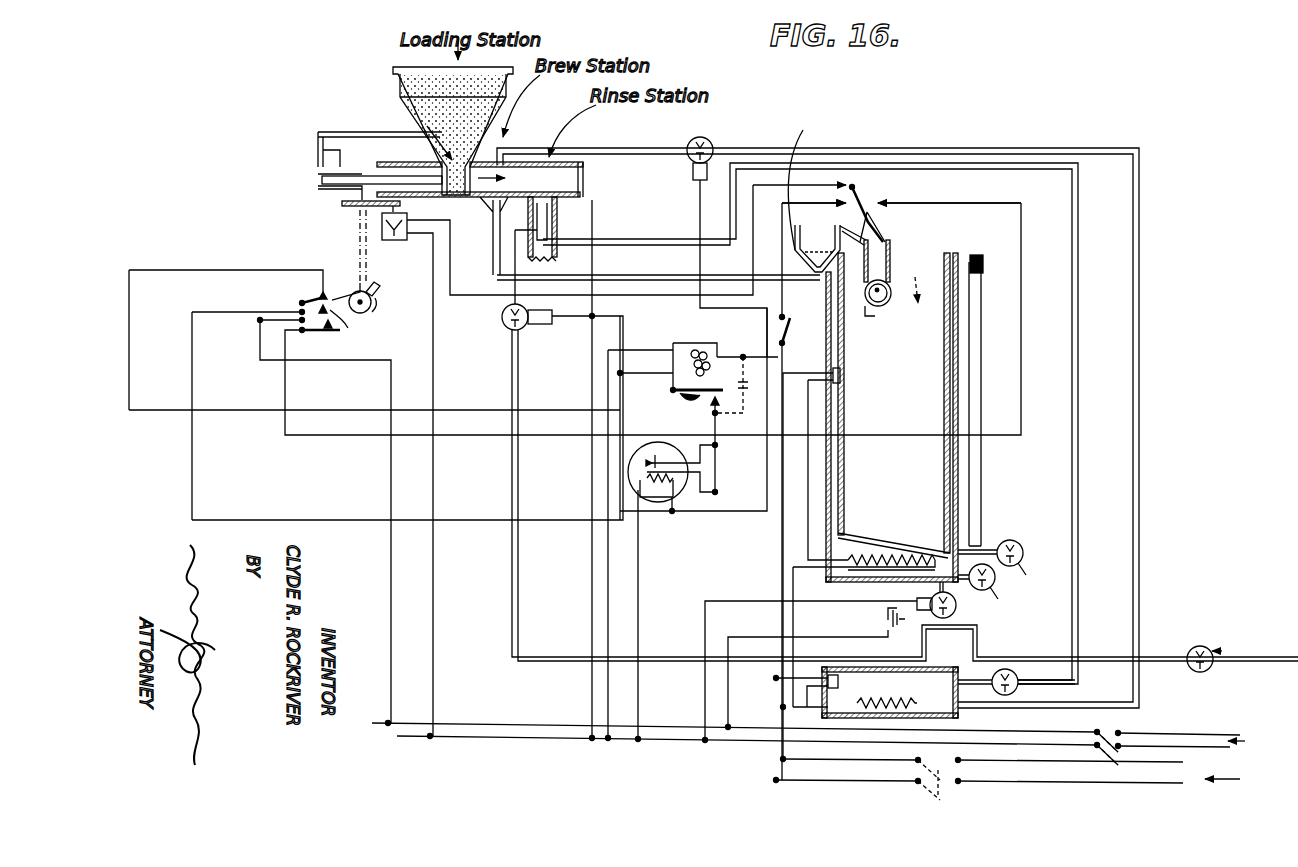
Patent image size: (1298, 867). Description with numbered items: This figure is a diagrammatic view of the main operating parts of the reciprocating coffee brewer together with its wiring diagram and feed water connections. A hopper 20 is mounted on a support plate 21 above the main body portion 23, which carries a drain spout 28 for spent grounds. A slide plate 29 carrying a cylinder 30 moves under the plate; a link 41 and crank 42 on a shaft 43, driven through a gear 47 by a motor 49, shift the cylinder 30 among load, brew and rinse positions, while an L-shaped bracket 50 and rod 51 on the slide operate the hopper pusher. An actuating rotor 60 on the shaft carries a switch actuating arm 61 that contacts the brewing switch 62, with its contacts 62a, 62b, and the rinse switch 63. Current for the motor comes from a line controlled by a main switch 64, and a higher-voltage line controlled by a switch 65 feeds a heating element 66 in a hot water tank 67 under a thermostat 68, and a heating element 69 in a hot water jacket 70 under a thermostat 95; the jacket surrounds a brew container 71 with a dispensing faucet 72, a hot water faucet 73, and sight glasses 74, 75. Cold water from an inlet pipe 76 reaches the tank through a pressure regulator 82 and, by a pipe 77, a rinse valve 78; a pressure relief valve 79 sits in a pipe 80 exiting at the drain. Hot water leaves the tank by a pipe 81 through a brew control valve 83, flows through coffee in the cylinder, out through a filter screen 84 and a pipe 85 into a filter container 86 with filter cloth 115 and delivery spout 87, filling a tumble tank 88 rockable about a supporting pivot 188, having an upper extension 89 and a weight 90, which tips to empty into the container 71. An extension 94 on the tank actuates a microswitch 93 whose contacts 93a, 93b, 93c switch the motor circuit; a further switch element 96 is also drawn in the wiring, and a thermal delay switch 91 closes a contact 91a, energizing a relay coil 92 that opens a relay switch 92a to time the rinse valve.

The hopper 20 is at (415, 105).
The support plate 21 is at (420, 160).
The main body portion 23 is at (583, 192).
The drain spout 28 is at (552, 220).
The slide plate 29 is at (320, 163).
The cylinder 30 is at (478, 200).
The link 41 is at (375, 180).
The crank 42 is at (325, 190).
The shaft 43 is at (402, 205).
The gear 47 is at (345, 207).
The motor 49 is at (395, 240).
The L-shaped bracket 50 is at (318, 150).
The rod 51 is at (333, 150).
The actuating rotor 60 is at (378, 302).
The switch actuating arm 61 is at (380, 285).
The brewing switch 62 is at (310, 298).
The switch contact 62a is at (332, 290).
The switch contact 62b is at (346, 323).
The rinse switch 63 is at (326, 332).
The main switch 64 is at (834, 732).
The switch 65 is at (928, 788).
The heating element 66 is at (905, 702).
The hot water tank 67 is at (958, 712).
The thermostat 68 is at (838, 683).
The heating element 69 is at (890, 555).
The hot water jacket 70 is at (885, 584).
The brew container 71 is at (942, 466).
The dispensing faucet 72 is at (997, 536).
The faucet 73 is at (995, 590).
The sight glass 74 is at (982, 472).
The sight glass 75 is at (985, 258).
The inlet pipe 76 is at (1160, 655).
The pipe 77 is at (640, 656).
The rinse valve 78 is at (522, 330).
The pressure relief valve 79 is at (1010, 668).
The pipe 80 is at (642, 243).
The pipe 81 is at (640, 150).
The pressure regulator 82 is at (958, 633).
The brew control valve 83 is at (710, 144).
The filter screen 84 is at (500, 190).
The pipe 85 is at (645, 277).
The filter container 86 is at (812, 268).
The delivery spout 87 is at (878, 223).
The tumble tank 88 is at (890, 305).
The upper extension 89 is at (893, 268).
The weight 90 is at (871, 318).
The thermal delay switch 91 is at (684, 500).
The contact 91a is at (655, 455).
The relay coil 92 is at (695, 350).
The relay switch 92a is at (688, 400).
The microswitch 93 is at (866, 195).
The switch contact 93a is at (852, 185).
The switch contact 93b is at (842, 210).
The switch contact 93c is at (878, 203).
The extension 94 is at (880, 243).
The thermostat 95 is at (842, 378).
The switch 96 is at (790, 323).
The filter cloth 115 is at (807, 180).
The supporting pivot 188 is at (878, 292).